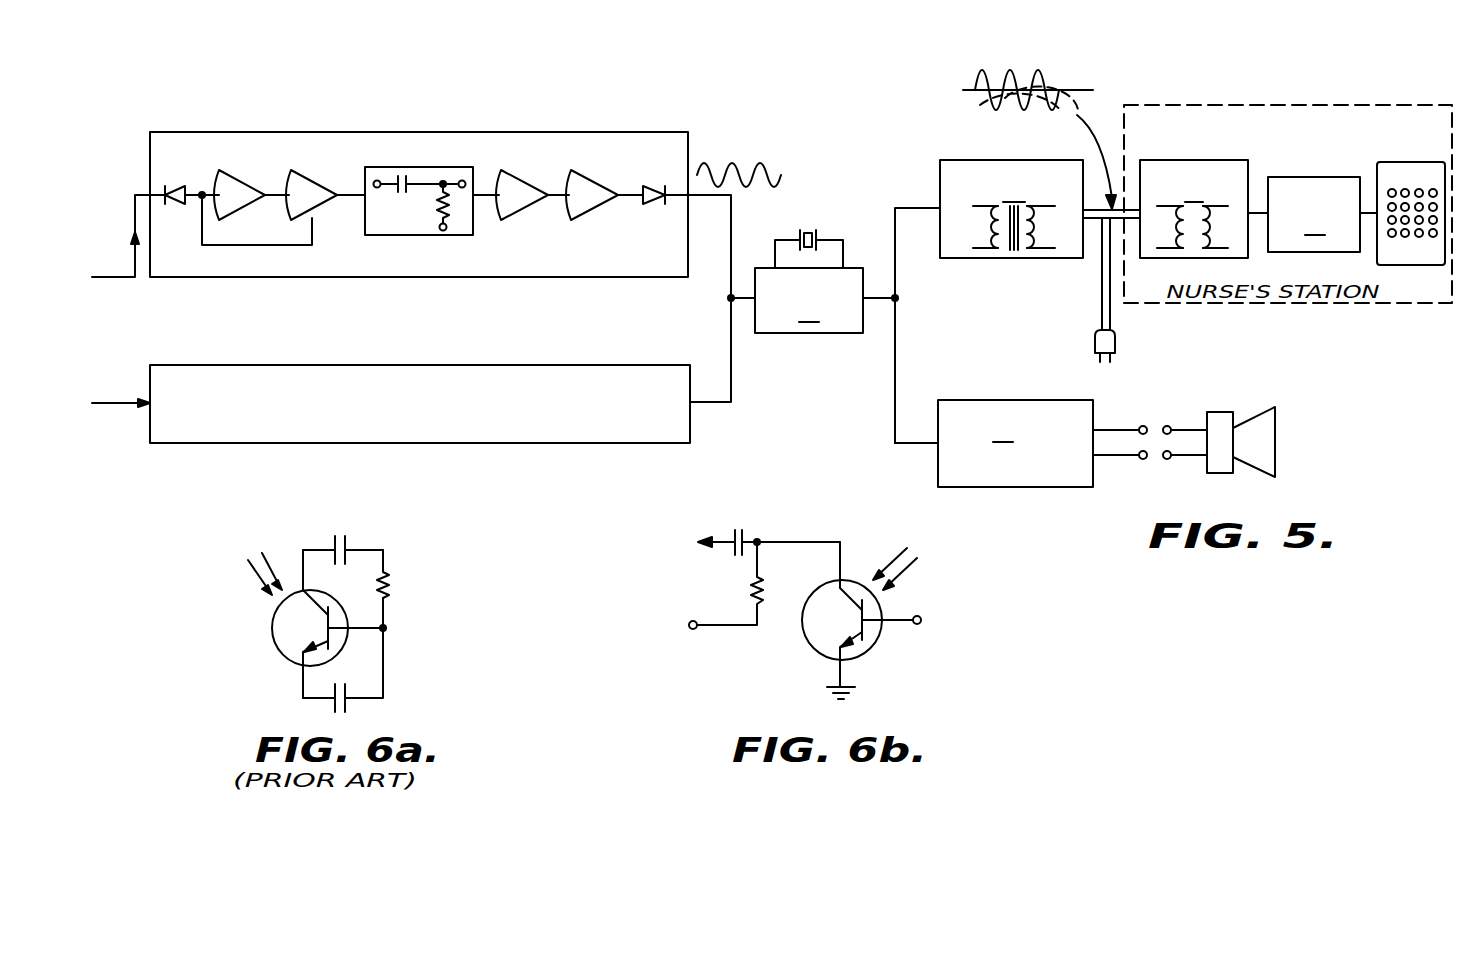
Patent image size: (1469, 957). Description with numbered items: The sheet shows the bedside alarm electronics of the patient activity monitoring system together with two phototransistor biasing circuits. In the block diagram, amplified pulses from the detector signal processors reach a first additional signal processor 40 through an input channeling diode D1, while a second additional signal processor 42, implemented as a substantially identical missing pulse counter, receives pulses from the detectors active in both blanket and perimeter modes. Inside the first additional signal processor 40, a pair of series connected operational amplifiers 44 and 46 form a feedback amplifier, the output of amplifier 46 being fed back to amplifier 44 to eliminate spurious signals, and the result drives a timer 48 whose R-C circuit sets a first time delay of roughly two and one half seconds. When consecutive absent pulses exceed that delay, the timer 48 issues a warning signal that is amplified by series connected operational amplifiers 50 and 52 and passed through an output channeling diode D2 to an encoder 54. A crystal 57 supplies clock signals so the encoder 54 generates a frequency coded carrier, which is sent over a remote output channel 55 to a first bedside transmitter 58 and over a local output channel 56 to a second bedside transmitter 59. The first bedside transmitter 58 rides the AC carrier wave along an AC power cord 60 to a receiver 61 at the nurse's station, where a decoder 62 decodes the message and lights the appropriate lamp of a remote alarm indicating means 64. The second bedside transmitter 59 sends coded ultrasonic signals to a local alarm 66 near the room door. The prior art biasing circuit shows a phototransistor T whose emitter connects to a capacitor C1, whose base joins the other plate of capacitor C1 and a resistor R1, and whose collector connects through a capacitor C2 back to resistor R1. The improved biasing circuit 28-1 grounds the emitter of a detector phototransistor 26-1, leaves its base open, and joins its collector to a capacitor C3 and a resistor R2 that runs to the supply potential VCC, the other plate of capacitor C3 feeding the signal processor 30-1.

In FIG. 5, the first additional signal processor 40 is at (389, 133).
In FIG. 5, the second additional signal processor 42 is at (363, 364).
In FIG. 5, the operational amplifier 44 is at (238, 178).
In FIG. 5, the operational amplifier 46 is at (312, 178).
In FIG. 5, the timer 48 is at (418, 167).
In FIG. 5, the operational amplifier 50 is at (520, 178).
In FIG. 5, the operational amplifier 52 is at (589, 178).
In FIG. 5, the encoder 54 is at (797, 300).
In FIG. 5, the remote output channel 55 is at (897, 281).
In FIG. 5, the local output channel 56 is at (895, 411).
In FIG. 5, the crystal 57 is at (817, 234).
In FIG. 5, the first bedside transmitter 58 is at (1011, 209).
In FIG. 5, the second bedside transmitter 59 is at (1042, 443).
In FIG. 5, the AC power cord 60 is at (1096, 220).
In FIG. 5, the receiver 61 is at (1194, 209).
In FIG. 5, the decoder 62 is at (1314, 214).
In FIG. 5, the remote alarm indicating means 64 is at (1405, 162).
In FIG. 5, the local alarm 66 is at (1220, 412).
In FIG. 5, the input channeling diode D1 is at (170, 185).
In FIG. 5, the output channeling diode D2 is at (657, 186).
In FIG. 6a, the phototransistor T is at (298, 627).
In FIG. 6a, the capacitor C1 is at (350, 688).
In FIG. 6a, the capacitor C2 is at (347, 541).
In FIG. 6a, the resistor R1 is at (389, 587).
In FIG. 6b, the capacitor C3 is at (750, 536).
In FIG. 6b, the resistor R2 is at (750, 597).
In FIG. 6b, the detector phototransistor 26-1 is at (836, 619).
In FIG. 6b, the phototransistor biasing circuit 28-1 is at (805, 643).
In FIG. 6b, the signal processor 30-1 is at (612, 543).
In FIG. 6b, the second source of reference potential VCC is at (643, 627).